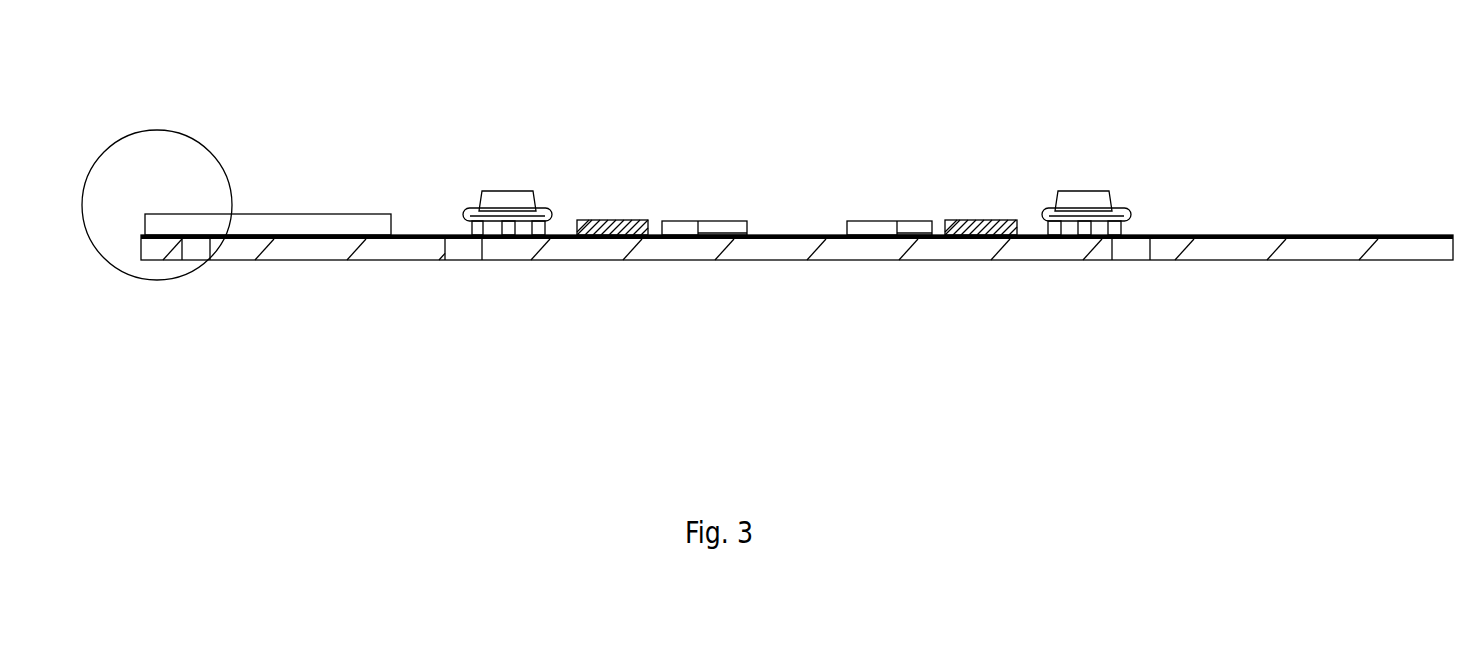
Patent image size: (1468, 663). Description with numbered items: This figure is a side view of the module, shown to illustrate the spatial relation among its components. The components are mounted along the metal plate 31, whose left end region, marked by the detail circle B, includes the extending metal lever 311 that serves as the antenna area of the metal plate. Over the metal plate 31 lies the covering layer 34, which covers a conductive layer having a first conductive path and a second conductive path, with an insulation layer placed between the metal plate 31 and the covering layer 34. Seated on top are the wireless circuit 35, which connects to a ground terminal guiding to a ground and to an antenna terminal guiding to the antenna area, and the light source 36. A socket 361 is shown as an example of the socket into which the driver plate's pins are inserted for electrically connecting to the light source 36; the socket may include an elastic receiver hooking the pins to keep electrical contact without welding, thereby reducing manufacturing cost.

The metal plate 31 is at (738, 252).
The extending metal lever 311 is at (155, 253).
The detail region B is at (190, 137).
The wireless circuit 35 is at (305, 222).
The socket 361 is at (511, 191).
The light source 36 is at (613, 220).
The covering layer 34 is at (765, 235).